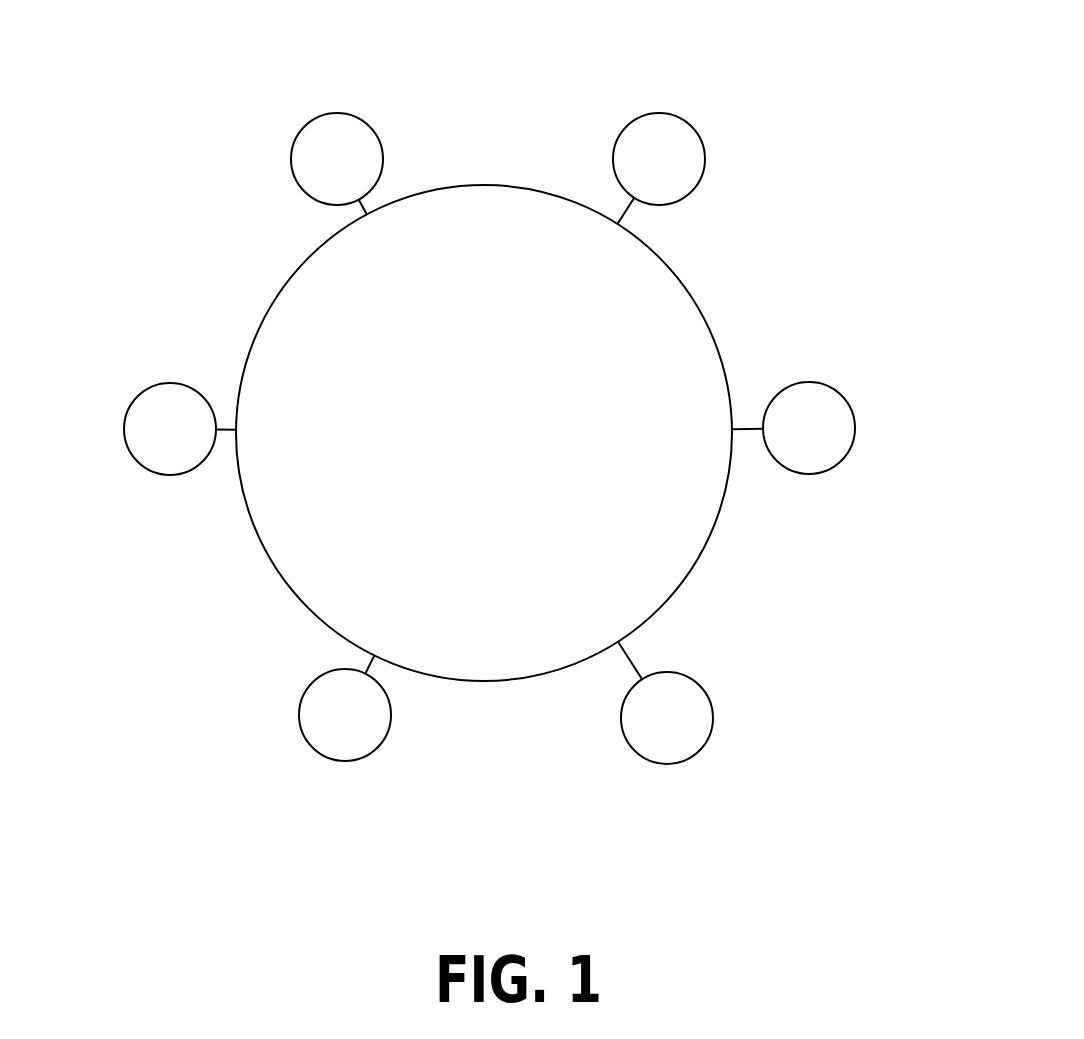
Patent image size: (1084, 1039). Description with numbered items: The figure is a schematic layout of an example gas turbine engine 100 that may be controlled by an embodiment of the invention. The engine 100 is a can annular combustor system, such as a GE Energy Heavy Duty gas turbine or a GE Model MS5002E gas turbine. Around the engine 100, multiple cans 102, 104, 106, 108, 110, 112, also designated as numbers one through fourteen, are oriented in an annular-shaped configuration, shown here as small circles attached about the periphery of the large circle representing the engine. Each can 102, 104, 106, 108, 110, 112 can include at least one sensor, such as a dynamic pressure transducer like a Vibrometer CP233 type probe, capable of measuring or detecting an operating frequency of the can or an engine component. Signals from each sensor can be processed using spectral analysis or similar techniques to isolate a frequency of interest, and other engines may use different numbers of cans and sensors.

The gas turbine engine 100 is at (786, 180).
The can 102 is at (309, 142).
The can 104 is at (135, 429).
The can 106 is at (334, 731).
The can 108 is at (690, 724).
The can 110 is at (830, 428).
The can 112 is at (675, 147).